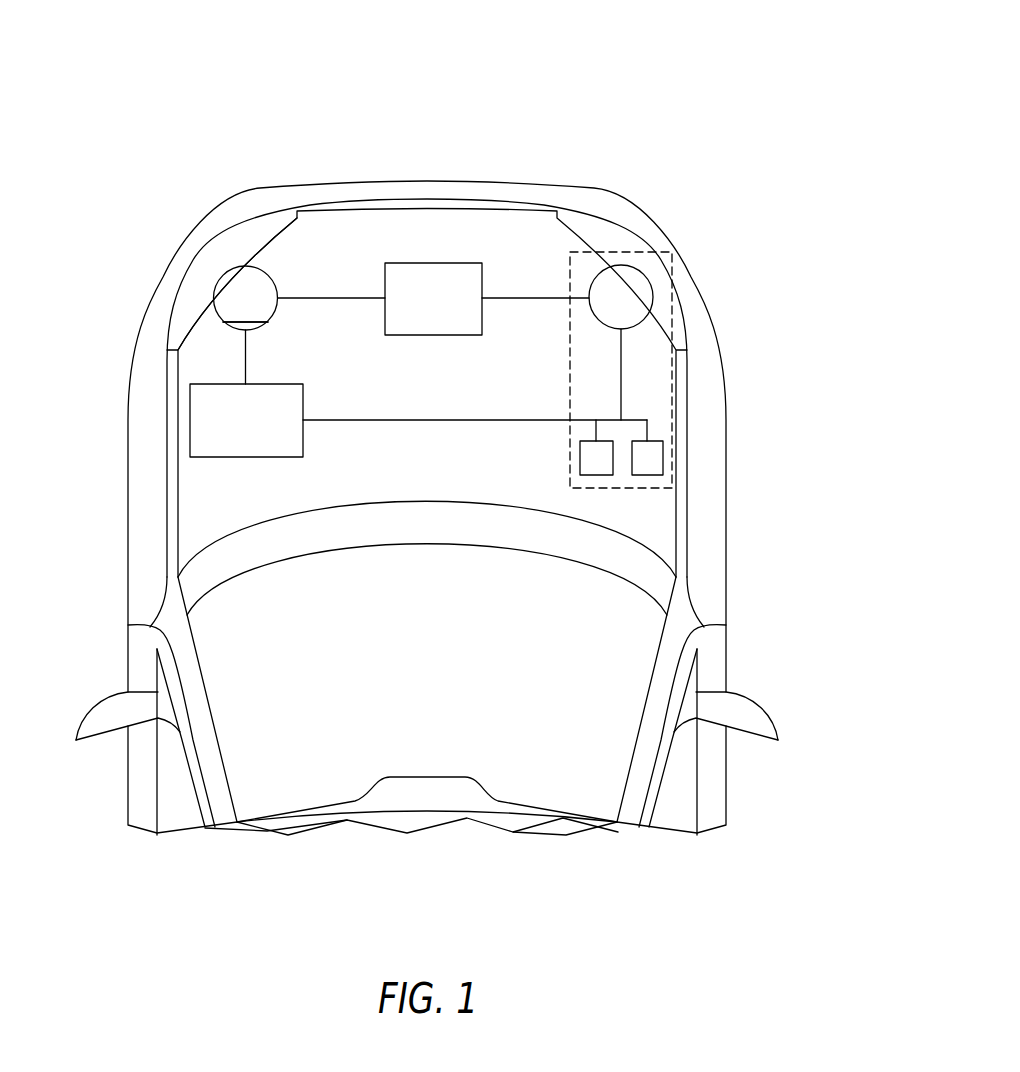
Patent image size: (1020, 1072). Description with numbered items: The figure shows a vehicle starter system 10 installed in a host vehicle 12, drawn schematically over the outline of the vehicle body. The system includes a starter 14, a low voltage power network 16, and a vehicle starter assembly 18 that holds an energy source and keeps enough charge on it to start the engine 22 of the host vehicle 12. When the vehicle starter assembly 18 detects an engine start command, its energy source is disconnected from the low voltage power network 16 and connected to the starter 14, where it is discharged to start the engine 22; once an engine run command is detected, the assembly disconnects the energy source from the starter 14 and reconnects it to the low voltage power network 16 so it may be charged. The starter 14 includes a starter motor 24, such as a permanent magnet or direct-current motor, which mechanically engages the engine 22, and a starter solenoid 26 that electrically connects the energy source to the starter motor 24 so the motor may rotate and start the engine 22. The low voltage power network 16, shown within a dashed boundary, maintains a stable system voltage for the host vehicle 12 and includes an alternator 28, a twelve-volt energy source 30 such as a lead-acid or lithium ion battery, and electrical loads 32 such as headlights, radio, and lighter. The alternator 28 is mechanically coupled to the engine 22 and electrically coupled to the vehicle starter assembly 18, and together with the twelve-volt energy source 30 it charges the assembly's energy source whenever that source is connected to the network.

The vehicle starter system 10 is at (633, 103).
The host vehicle 12 is at (203, 215).
The starter 14 is at (208, 293).
The low voltage power network 16 is at (637, 252).
The vehicle starter assembly 18 is at (190, 432).
The engine 22 is at (412, 263).
The starter motor 24 is at (243, 266).
The starter solenoid 26 is at (236, 324).
The alternator 28 is at (653, 288).
The 12-volt energy source 30 is at (580, 465).
The electrical loads 32 is at (663, 453).